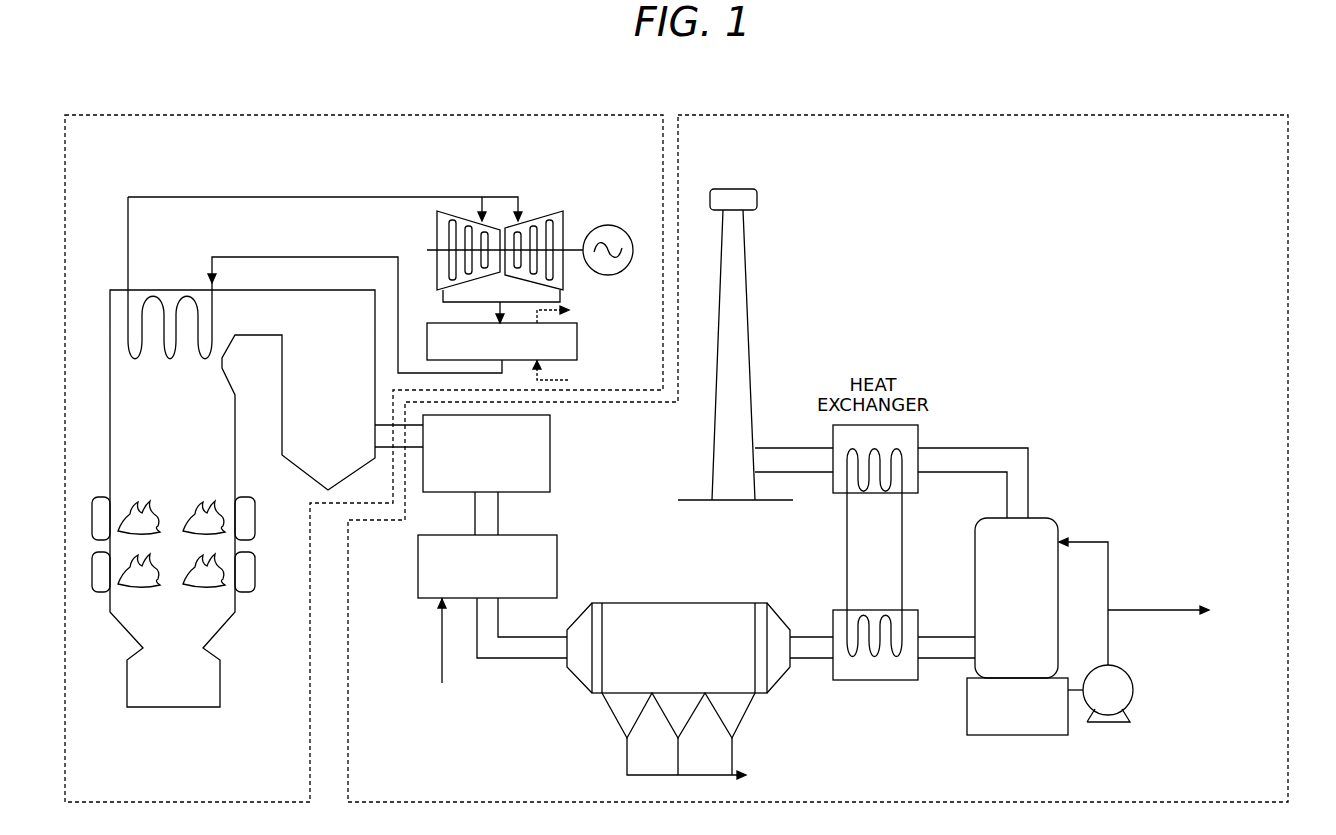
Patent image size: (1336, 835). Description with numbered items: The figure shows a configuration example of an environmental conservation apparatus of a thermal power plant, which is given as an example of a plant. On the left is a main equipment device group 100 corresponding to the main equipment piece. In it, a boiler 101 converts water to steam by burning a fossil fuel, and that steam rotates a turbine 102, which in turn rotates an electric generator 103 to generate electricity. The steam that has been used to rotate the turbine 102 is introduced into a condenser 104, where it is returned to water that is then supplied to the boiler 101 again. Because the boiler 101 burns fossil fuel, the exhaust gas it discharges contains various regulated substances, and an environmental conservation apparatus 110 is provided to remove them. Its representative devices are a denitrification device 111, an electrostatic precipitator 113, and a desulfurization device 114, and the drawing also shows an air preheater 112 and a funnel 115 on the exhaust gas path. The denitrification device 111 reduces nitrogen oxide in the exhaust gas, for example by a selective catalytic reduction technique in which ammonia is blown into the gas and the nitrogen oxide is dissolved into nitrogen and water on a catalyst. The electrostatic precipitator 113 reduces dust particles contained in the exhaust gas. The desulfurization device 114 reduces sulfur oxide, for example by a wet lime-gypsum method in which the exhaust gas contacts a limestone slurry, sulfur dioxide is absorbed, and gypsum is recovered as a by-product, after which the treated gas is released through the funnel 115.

The main equipment device group 100 is at (340, 115).
The boiler 101 is at (175, 707).
The turbine 102 is at (540, 215).
The electric generator 103 is at (608, 224).
The condenser 104 is at (577, 340).
The environmental conservation apparatus 110 is at (948, 115).
The denitrification device 111 is at (550, 450).
The air preheater 112 is at (557, 560).
The electrostatic precipitator 113 is at (690, 603).
The desulfurization device 114 is at (1043, 518).
The funnel 115 is at (738, 267).